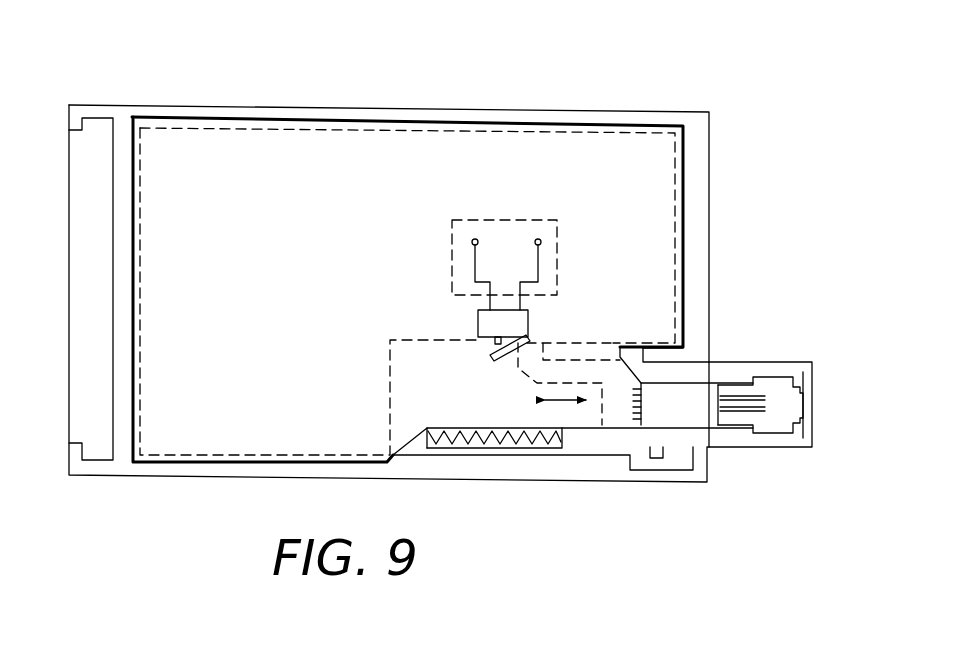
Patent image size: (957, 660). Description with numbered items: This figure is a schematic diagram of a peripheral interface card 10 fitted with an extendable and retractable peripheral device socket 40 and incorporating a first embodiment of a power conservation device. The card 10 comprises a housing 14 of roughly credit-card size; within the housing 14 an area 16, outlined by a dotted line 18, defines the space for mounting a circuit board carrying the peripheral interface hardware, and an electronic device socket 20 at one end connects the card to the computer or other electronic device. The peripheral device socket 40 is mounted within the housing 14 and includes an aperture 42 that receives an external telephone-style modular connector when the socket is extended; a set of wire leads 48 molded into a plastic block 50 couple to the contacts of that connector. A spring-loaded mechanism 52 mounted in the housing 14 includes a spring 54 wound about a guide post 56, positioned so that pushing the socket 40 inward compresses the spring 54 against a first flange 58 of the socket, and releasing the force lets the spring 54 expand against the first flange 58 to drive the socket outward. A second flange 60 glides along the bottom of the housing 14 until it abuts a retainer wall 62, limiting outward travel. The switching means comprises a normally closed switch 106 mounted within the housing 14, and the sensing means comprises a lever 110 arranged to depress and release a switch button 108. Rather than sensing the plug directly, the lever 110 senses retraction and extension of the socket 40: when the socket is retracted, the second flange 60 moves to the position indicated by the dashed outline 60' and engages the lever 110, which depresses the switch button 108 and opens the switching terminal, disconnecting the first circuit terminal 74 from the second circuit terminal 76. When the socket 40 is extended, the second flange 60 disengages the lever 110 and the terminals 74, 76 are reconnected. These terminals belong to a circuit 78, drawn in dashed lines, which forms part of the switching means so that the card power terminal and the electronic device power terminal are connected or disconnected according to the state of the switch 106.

The peripheral interface card 10 is at (421, 106).
The housing 14 is at (360, 110).
The area 16 is at (297, 156).
The dotted line 18 is at (245, 125).
The electronic device socket 20 is at (82, 163).
The extendable/retractable peripheral device socket 40 is at (798, 451).
The aperture 42 is at (790, 405).
The wire leads 48 is at (748, 417).
The plastic block 50 is at (680, 415).
The spring-loaded mechanism 52 is at (441, 452).
The spring 54 is at (533, 449).
The guide post 56 is at (473, 449).
The first flange 58 is at (602, 447).
The second flange 60 is at (599, 361).
The dashed outline of second flange 60' is at (569, 352).
The retainer wall 62 is at (668, 356).
The first circuit terminal 74 is at (539, 259).
The second circuit terminal 76 is at (473, 261).
The circuit 78 is at (500, 218).
The switch 106 is at (478, 321).
The switch button 108 is at (494, 343).
The lever 110 is at (497, 358).